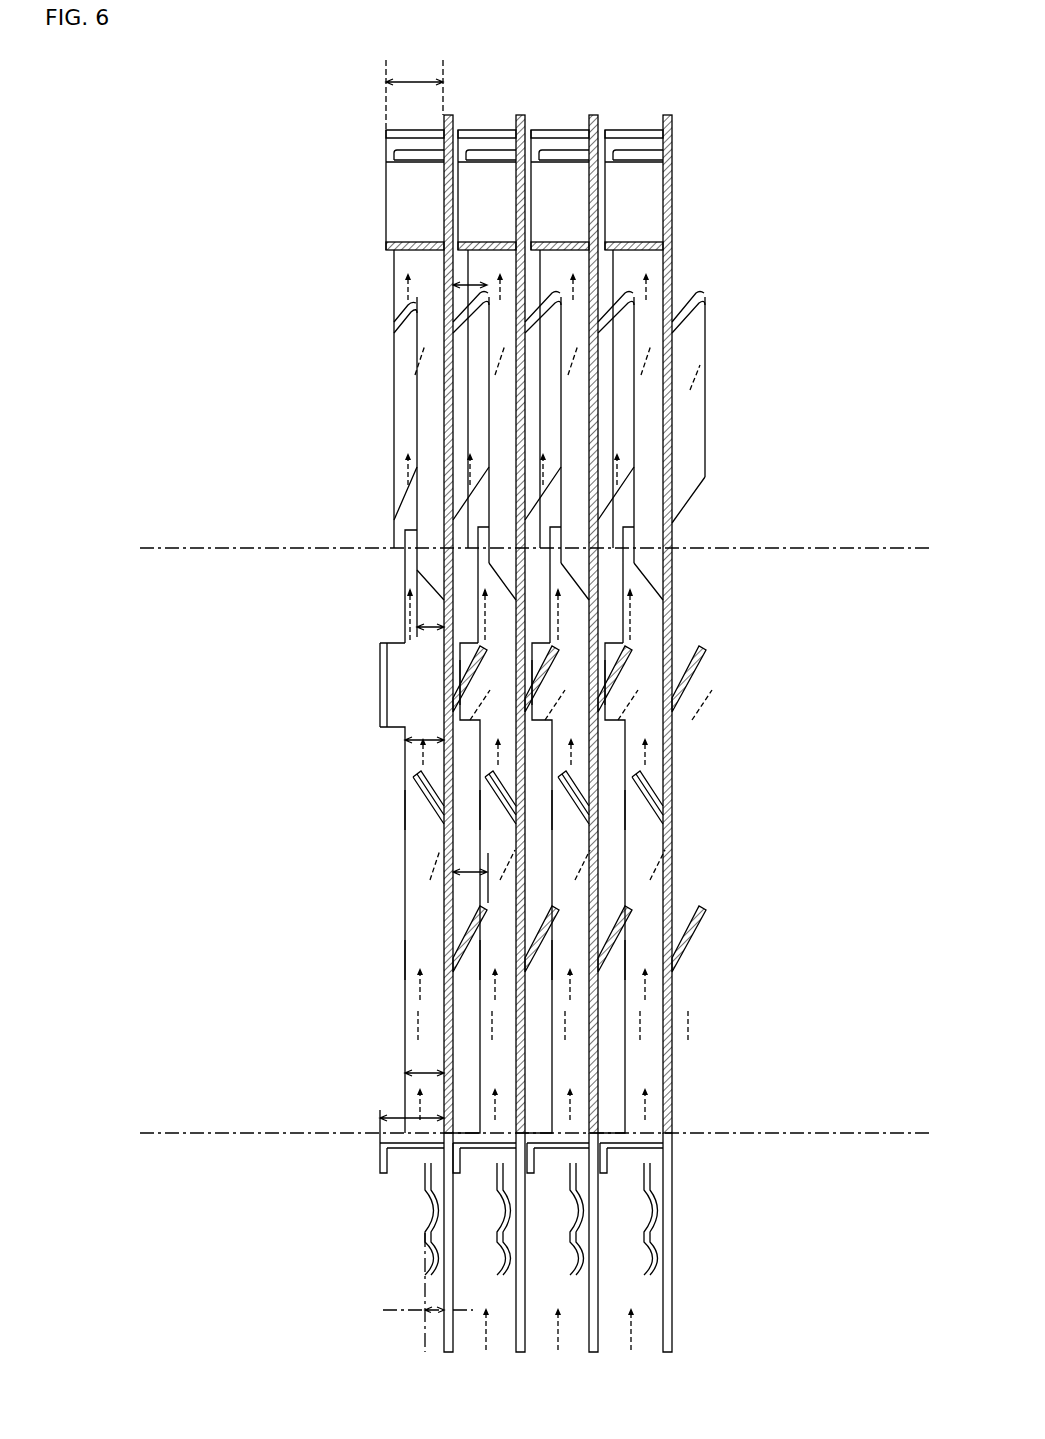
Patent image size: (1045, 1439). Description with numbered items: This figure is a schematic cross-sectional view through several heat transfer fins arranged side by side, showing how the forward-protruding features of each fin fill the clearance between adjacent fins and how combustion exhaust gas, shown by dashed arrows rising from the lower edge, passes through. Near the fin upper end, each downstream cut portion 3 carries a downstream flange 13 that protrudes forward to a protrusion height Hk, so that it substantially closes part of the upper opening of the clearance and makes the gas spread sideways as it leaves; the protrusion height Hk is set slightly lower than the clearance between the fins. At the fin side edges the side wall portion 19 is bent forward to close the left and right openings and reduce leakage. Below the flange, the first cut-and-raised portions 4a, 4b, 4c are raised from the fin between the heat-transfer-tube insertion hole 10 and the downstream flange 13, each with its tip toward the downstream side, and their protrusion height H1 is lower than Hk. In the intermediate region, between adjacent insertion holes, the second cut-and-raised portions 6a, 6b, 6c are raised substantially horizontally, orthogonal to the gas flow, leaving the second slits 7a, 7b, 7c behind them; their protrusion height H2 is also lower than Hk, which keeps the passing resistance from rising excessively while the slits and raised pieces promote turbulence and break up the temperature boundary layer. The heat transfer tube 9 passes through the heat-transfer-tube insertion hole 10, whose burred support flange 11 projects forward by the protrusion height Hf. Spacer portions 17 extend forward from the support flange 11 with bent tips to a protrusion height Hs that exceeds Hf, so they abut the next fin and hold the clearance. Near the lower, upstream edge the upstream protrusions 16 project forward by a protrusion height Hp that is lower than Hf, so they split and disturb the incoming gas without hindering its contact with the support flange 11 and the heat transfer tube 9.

The downstream cut portion 3 is at (647, 185).
The downstream flange 13 is at (570, 242).
The side wall portion 19 is at (390, 328).
The first cut-and-raised portion 4a is at (673, 532).
The first cut-and-raised portion 4b is at (673, 378).
The first cut-and-raised portion 4c is at (673, 291).
The heat transfer tube 9 is at (830, 548).
The second slit 7a is at (685, 908).
The second slit 7b is at (562, 779).
The second slit 7c is at (692, 655).
The second cut-and-raised portion 6a is at (600, 975).
The second cut-and-raised portion 6b is at (562, 808).
The second cut-and-raised portion 6c is at (598, 705).
The heat-transfer-tube insertion hole 10 is at (397, 983).
The support flange 11 is at (642, 1075).
The upstream protrusion 16 is at (666, 1260).
The spacer portion 17 is at (592, 1160).
The protrusion height of downstream flange Hk is at (388, 90).
The protrusion height of first cut-and-raised portions H1 is at (415, 610).
The protrusion height of second cut-and-raised portions H2 is at (440, 872).
The protrusion height of support flange Hf is at (405, 1073).
The protrusion height of spacer portion Hs is at (380, 1118).
The protrusion height of upstream protrusion Hp is at (425, 1310).